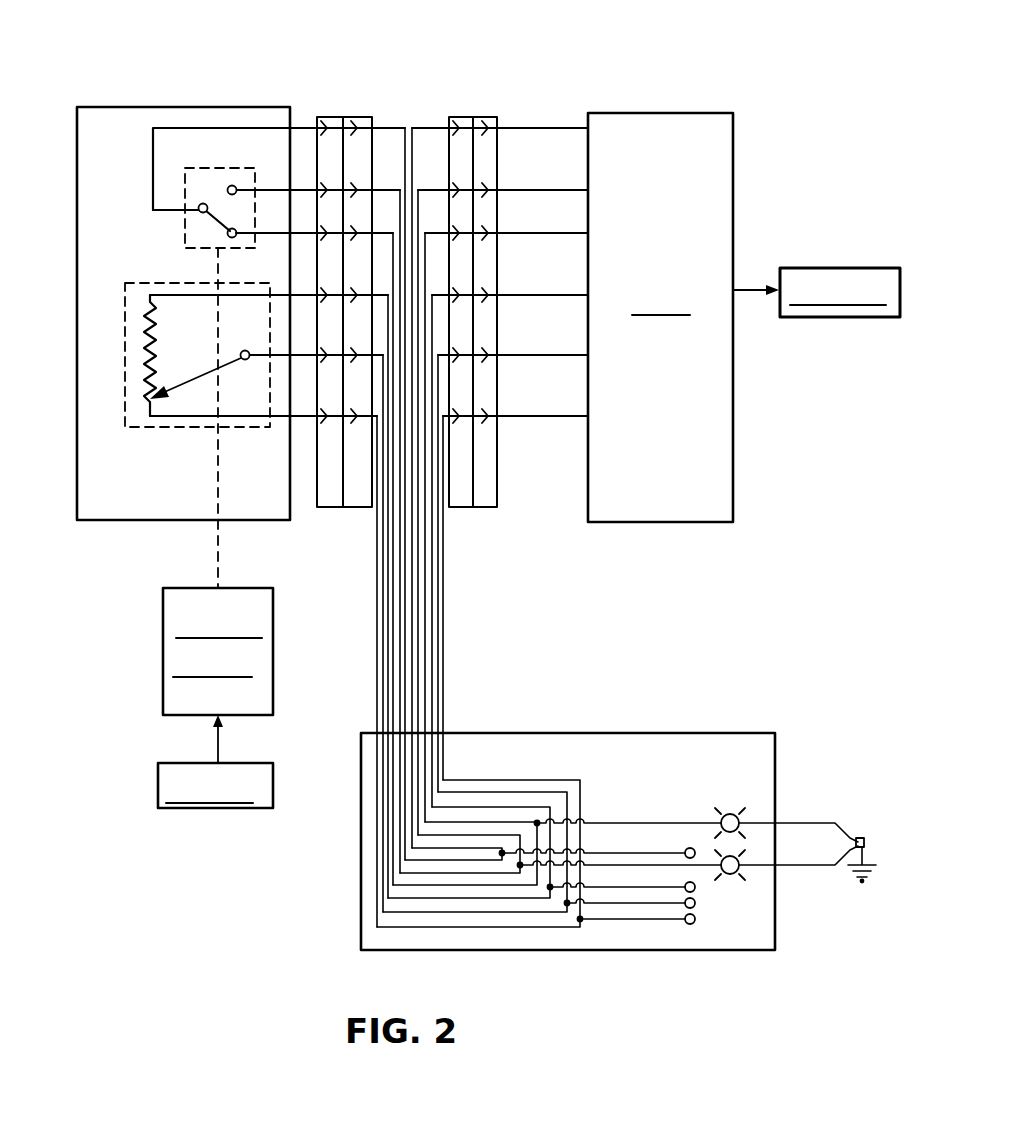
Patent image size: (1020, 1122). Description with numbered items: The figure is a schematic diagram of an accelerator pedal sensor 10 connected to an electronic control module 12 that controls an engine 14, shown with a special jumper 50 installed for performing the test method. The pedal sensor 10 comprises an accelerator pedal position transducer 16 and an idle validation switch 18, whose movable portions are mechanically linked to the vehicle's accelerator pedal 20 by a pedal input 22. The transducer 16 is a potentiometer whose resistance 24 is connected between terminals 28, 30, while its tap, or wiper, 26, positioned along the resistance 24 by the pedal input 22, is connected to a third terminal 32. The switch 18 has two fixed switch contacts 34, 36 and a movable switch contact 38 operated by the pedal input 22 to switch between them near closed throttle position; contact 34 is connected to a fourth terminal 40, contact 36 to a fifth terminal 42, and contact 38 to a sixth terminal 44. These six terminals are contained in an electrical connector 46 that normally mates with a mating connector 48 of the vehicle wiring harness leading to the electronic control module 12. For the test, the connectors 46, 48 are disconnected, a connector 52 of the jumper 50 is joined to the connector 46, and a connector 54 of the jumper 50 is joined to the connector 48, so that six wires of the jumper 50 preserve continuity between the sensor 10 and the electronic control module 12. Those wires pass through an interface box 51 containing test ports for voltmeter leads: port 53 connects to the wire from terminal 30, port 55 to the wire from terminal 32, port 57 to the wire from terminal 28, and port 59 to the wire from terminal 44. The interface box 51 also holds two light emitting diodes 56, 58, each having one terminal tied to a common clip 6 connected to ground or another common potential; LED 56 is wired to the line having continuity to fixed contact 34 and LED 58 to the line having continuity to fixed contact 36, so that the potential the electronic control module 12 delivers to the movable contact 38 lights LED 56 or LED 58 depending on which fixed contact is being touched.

The common clip 6 is at (855, 840).
The accelerator pedal sensor 10 is at (120, 582).
The electronic control module (ECM) 12 is at (655, 524).
The engine 14 is at (837, 318).
The accelerator pedal position transducer 16 is at (163, 430).
The idle validation switch 18 is at (186, 197).
The accelerator pedal 20 is at (274, 795).
The pedal input 22 is at (274, 661).
The resistance 24 is at (172, 326).
The tap (wiper) 26 is at (190, 382).
The terminal 28 is at (322, 303).
The terminal 30 is at (324, 433).
The third terminal 32 is at (324, 372).
The fixed switch contact 34 is at (228, 237).
The fixed switch contact 36 is at (235, 188).
The movable switch contact 38 is at (200, 216).
The fourth terminal 40 is at (322, 241).
The fifth terminal 42 is at (332, 188).
The sixth terminal 44 is at (336, 271).
The electrical connector 46 is at (325, 134).
The mating connector 48 is at (478, 261).
The jumper 50 is at (458, 660).
The interface box 51 is at (582, 733).
The connector 52 is at (360, 135).
The port 53 is at (692, 925).
The connector 54 is at (458, 124).
The port 55 is at (694, 906).
The light emitting diode (LED) 56 is at (741, 816).
The port 57 is at (694, 890).
The light emitting diode (LED) 58 is at (741, 872).
The port 59 is at (688, 846).